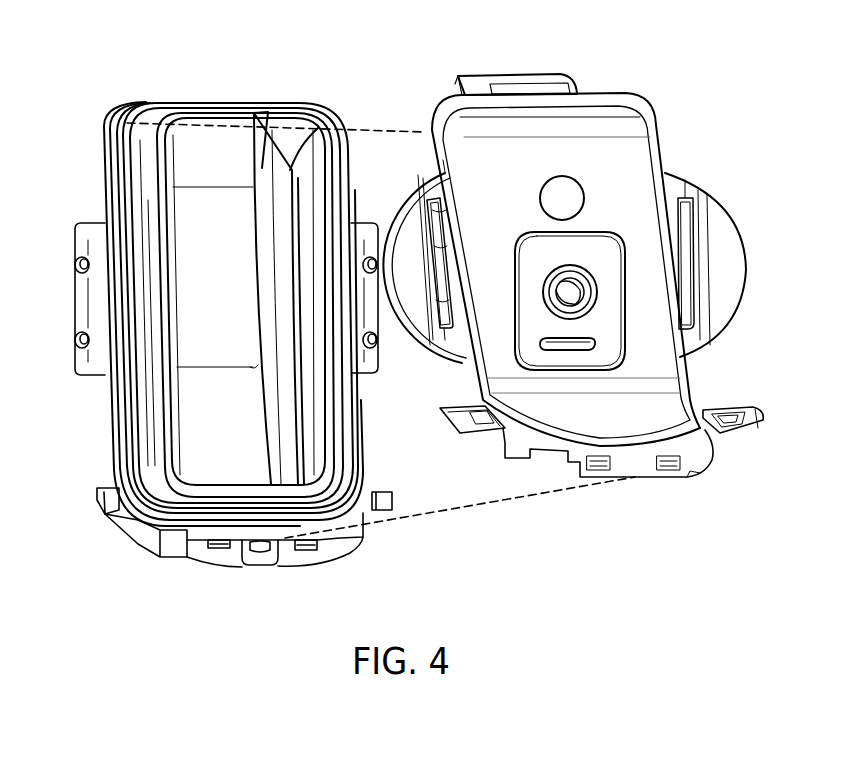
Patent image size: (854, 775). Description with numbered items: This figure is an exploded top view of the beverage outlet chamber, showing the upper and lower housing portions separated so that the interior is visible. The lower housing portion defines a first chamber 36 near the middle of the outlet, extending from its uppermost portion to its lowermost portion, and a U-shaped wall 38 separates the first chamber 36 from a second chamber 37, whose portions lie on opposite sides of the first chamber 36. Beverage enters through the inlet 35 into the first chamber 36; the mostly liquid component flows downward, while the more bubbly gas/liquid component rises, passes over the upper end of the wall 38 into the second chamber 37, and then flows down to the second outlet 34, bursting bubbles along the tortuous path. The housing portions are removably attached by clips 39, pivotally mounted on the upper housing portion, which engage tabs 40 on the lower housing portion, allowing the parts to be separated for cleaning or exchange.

The second outlet 34 is at (260, 553).
The inlet 35 is at (583, 285).
The first chamber 36 is at (178, 228).
The second chamber 37 is at (153, 395).
The U-shaped wall 38 is at (313, 140).
The clips 39 is at (512, 78).
The tabs 40 is at (76, 340).